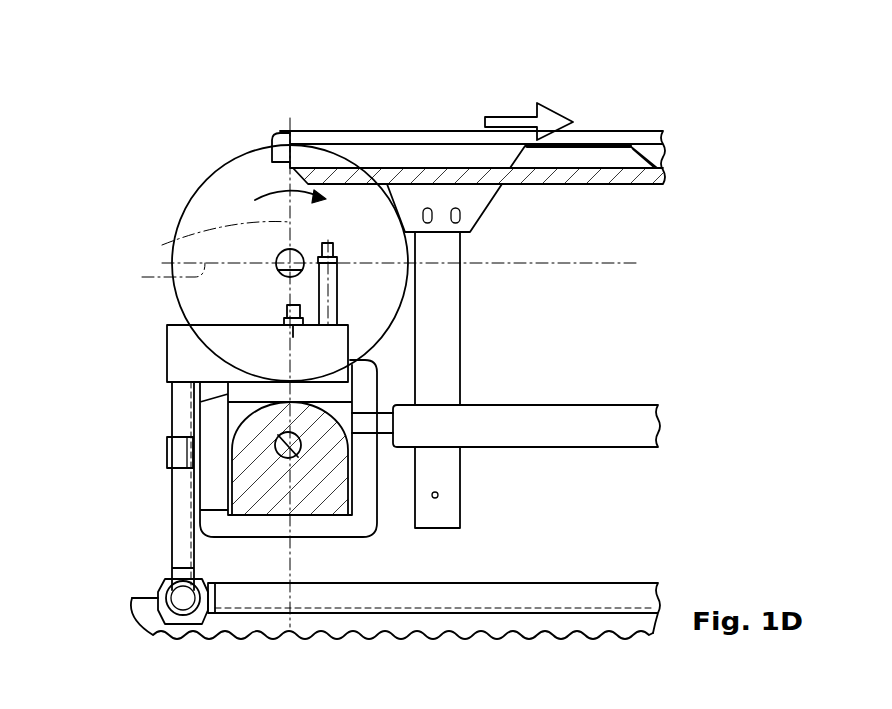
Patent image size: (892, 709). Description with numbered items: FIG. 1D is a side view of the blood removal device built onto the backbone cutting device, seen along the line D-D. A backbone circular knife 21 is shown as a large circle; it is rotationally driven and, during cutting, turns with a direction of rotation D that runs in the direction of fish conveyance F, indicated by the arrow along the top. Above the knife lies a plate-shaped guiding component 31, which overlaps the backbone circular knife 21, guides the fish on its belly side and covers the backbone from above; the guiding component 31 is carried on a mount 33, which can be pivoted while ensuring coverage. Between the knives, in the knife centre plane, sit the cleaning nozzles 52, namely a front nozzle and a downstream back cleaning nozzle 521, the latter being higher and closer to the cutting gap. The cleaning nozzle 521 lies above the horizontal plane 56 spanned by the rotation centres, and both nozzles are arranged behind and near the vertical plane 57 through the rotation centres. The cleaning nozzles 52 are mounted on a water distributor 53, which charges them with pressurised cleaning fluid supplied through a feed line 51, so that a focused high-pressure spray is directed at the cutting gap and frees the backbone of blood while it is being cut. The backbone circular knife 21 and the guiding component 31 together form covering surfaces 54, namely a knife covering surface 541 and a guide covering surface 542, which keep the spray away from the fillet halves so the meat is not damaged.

The backbone circular knife 21 is at (218, 197).
The plate-shaped guiding component 31 is at (323, 137).
The mount 33 is at (452, 317).
The feed line 51 is at (188, 555).
The cleaning nozzle 52 is at (290, 308).
The back cleaning nozzle 521 is at (333, 248).
The water distributor 53 is at (263, 367).
The covering surface 54 is at (188, 146).
The knife covering surface 541 is at (278, 208).
The guide covering surface 542 is at (268, 163).
The horizontal plane 56 is at (160, 279).
The vertical plane 57 is at (162, 245).
The direction of rotation D is at (268, 192).
The direction of fish conveyance F is at (515, 113).